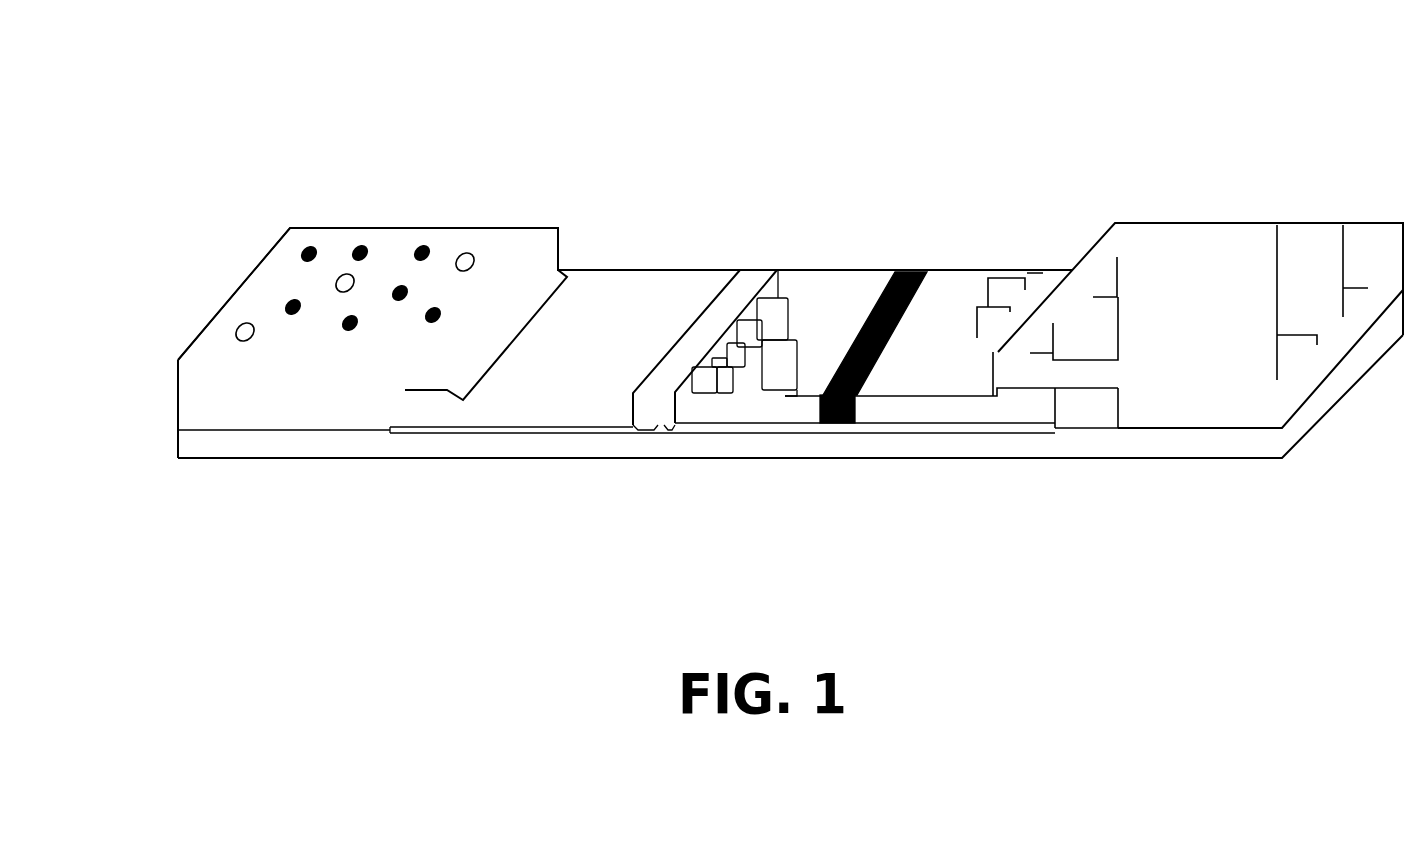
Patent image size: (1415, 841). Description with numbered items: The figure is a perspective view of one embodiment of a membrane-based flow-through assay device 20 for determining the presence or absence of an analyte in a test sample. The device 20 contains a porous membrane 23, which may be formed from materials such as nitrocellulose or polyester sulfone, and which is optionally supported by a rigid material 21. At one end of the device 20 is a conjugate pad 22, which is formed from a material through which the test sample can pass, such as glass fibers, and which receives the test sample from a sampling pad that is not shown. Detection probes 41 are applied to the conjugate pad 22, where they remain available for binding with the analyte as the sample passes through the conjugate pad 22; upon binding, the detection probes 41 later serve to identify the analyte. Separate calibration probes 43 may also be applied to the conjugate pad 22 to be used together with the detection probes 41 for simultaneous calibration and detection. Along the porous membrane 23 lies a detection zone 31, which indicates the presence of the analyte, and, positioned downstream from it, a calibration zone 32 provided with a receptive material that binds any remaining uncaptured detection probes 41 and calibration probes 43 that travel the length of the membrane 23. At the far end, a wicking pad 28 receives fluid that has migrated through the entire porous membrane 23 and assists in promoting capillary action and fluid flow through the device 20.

The flow-through assay device 20 is at (303, 84).
The rigid material 21 is at (1197, 455).
The conjugate pad 22 is at (160, 363).
The porous membrane 23 is at (932, 392).
The wicking pad 28 is at (1256, 260).
The detection zone 31 is at (680, 359).
The calibration zone 32 is at (911, 272).
The detection probes 41 is at (361, 250).
The calibration probes 43 is at (470, 262).